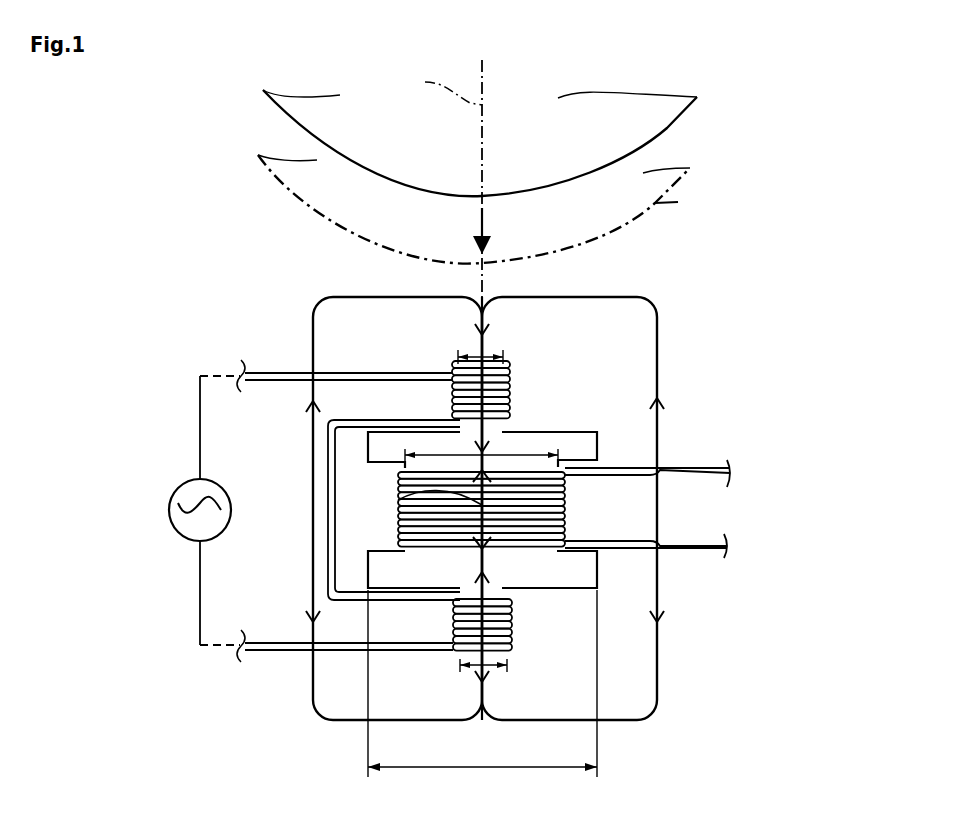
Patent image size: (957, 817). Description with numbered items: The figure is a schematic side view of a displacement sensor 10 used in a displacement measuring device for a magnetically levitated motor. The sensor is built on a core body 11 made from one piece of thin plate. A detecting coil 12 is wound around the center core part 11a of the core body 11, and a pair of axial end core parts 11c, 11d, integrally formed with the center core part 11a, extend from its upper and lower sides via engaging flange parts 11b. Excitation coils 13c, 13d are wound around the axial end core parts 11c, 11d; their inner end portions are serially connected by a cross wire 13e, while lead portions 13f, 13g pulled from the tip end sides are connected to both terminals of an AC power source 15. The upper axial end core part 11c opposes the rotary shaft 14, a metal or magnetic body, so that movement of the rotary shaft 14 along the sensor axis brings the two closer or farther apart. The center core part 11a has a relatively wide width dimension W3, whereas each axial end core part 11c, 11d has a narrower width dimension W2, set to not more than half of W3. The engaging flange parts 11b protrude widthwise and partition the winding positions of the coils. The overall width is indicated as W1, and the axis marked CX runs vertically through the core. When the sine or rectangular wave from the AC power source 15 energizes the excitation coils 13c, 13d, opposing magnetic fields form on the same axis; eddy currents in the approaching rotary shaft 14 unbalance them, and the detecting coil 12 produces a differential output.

The displacement sensor 10 is at (678, 298).
The core body 11 is at (558, 427).
The center core part 11a is at (530, 510).
The engaging flange parts 11b is at (585, 448).
The axial end core part 11c is at (455, 367).
The axial end core part 11d is at (500, 652).
The detecting coil 12 is at (693, 470).
The excitation coil 13c is at (455, 397).
The excitation coil 13d is at (510, 617).
The cross wire 13e is at (330, 512).
The lead portion 13f is at (263, 373).
The lead portion 13g is at (283, 653).
The rotary shaft 14 is at (697, 207).
The AC power source 15 is at (180, 487).
The coupling axis CX is at (410, 498).
The core width W1 is at (482, 683).
The width dimension of axial end core parts W2 is at (490, 355).
The width dimension of center core part W3 is at (510, 455).